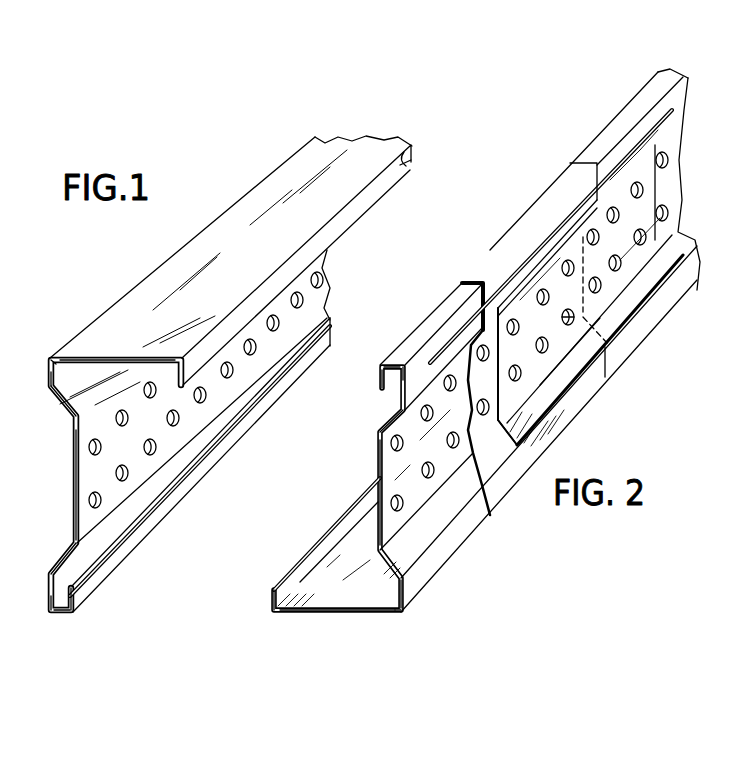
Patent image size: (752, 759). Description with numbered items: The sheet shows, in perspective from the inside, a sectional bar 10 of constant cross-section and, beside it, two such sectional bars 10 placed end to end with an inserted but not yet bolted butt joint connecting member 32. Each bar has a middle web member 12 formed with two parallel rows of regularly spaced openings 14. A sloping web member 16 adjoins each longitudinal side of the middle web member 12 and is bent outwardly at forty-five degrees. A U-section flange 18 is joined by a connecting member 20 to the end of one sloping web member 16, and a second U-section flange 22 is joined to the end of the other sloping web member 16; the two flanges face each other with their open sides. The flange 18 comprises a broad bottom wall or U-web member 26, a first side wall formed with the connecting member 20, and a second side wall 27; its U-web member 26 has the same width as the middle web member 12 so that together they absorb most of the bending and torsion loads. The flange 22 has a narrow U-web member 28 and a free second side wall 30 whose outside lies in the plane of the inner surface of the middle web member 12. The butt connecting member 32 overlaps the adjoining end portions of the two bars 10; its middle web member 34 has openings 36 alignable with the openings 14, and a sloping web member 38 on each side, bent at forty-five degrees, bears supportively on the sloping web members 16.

In FIG. 1, the sectional bar 10 is at (275, 122).
In FIG. 2, the sectional bar 10 is at (617, 70).
In FIG. 1, the middle web member 12 is at (74, 500).
In FIG. 2, the middle web member 12 is at (378, 463).
In FIG. 1, the openings 14 is at (90, 450).
In FIG. 2, the openings 14 is at (393, 500).
In FIG. 1, the sloping web member 16 is at (70, 420).
In FIG. 2, the sloping web member 16 is at (390, 416).
In FIG. 1, the U-section flange 18 is at (51, 357).
In FIG. 2, the U-section flange 18 is at (400, 616).
In FIG. 1, the connecting member 20 is at (50, 384).
In FIG. 2, the connecting member 20 is at (405, 590).
In FIG. 1, the second U-section flange 22 is at (49, 614).
In FIG. 2, the second U-section flange 22 is at (404, 362).
In FIG. 1, the U-web member 26 is at (105, 358).
In FIG. 2, the U-web member 26 is at (315, 614).
In FIG. 1, the second side wall 27 is at (410, 150).
In FIG. 2, the second side wall 27 is at (272, 605).
In FIG. 1, the U-web member 28 is at (64, 614).
In FIG. 2, the U-web member 28 is at (390, 364).
In FIG. 1, the second side wall 30 is at (80, 598).
In FIG. 2, the second side wall 30 is at (380, 380).
In FIG. 2, the butt joint connecting member 32 is at (562, 362).
In FIG. 2, the middle web member 34 is at (500, 400).
In FIG. 2, the openings 36 is at (575, 320).
In FIG. 2, the sloping web member 38 is at (497, 303).